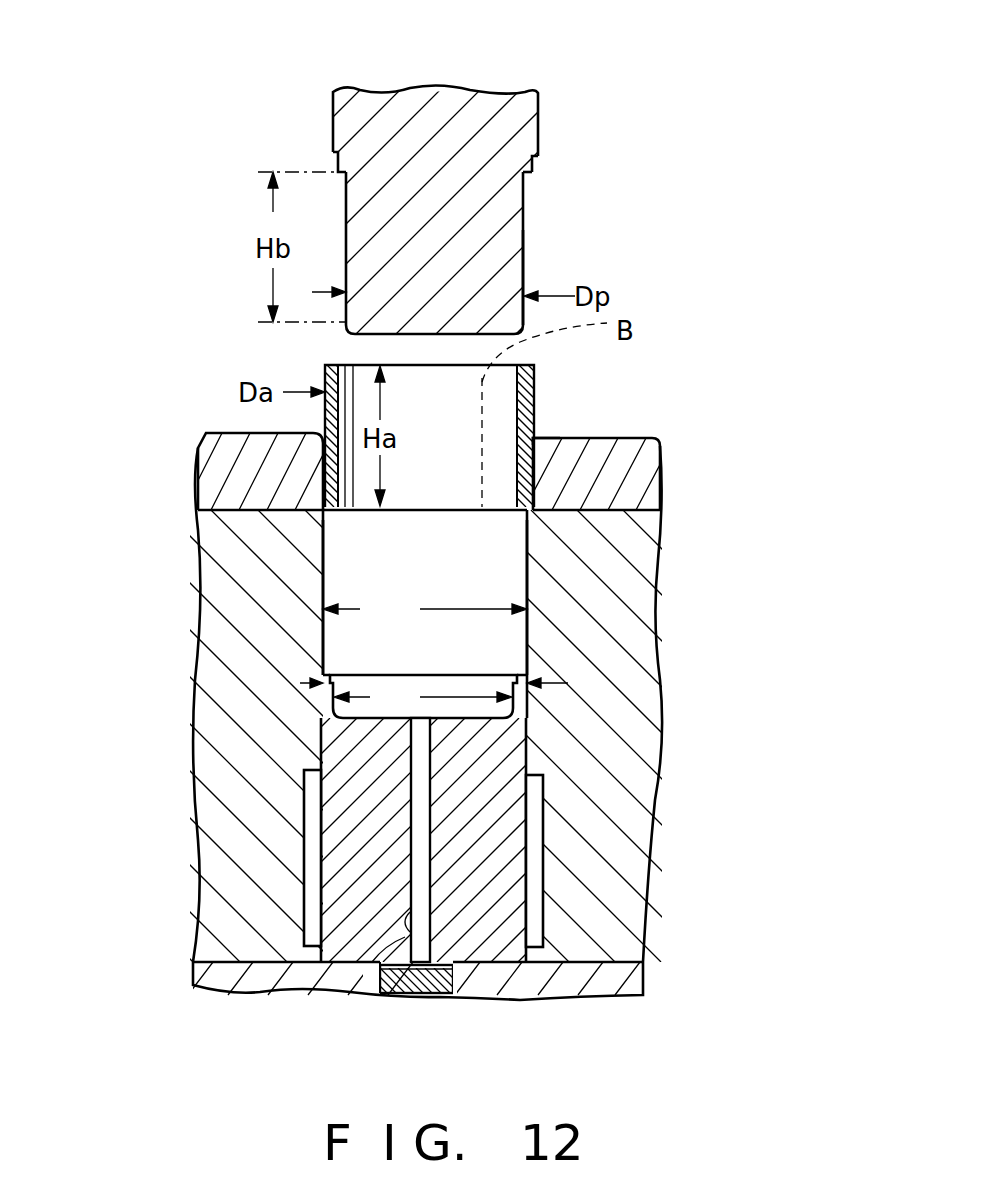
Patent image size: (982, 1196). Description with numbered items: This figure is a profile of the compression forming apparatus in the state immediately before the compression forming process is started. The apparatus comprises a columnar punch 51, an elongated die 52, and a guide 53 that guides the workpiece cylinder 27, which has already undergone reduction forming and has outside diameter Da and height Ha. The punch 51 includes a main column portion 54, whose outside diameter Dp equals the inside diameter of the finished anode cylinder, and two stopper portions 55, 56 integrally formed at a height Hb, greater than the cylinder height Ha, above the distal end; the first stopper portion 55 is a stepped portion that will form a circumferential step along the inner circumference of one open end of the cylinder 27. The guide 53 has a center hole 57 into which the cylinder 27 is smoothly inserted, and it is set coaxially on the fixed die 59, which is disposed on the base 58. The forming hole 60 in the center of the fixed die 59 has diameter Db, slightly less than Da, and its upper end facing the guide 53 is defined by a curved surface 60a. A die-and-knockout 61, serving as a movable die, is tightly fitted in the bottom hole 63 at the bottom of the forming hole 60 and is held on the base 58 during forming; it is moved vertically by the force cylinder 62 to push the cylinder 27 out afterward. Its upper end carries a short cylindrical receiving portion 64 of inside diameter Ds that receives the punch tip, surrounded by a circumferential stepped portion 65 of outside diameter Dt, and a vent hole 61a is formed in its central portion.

The columnar punch 51 is at (540, 122).
The second stopper portion 56 is at (538, 162).
The first stopper portion 55 is at (528, 175).
The main column portion 54 is at (510, 270).
The cylinder 27 is at (534, 380).
The center hole 57 is at (536, 440).
The guide 53 is at (630, 445).
The curved surface 60a is at (531, 517).
The forming hole 60 is at (530, 585).
The fixed die 59 is at (638, 612).
The elongated die 52 is at (491, 670).
The receiving portion 64 is at (517, 678).
The circumferential stepped portion 65 is at (583, 710).
The die-and-knockout 61 is at (424, 791).
The bottom hole 63 is at (530, 855).
The vent hole 61a is at (372, 962).
The force cylinder 62 is at (427, 992).
The base 58 is at (590, 995).